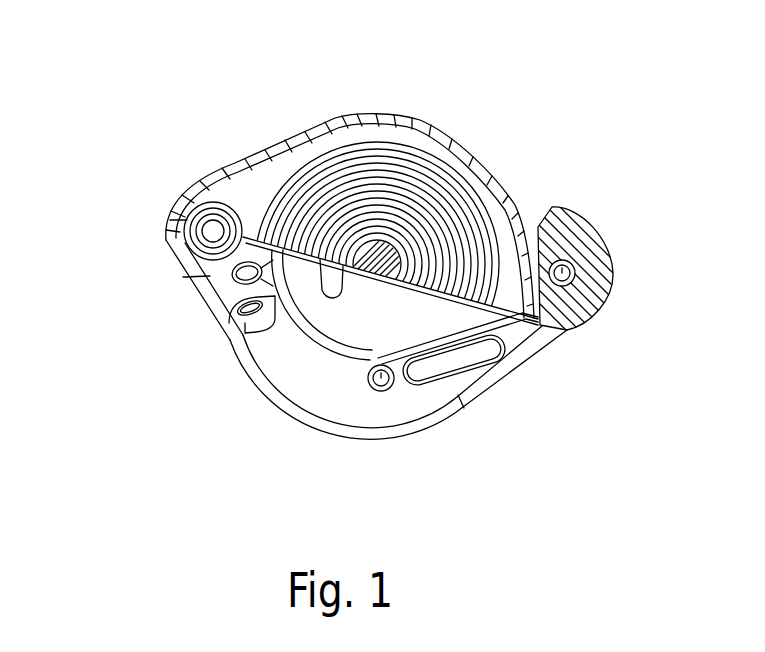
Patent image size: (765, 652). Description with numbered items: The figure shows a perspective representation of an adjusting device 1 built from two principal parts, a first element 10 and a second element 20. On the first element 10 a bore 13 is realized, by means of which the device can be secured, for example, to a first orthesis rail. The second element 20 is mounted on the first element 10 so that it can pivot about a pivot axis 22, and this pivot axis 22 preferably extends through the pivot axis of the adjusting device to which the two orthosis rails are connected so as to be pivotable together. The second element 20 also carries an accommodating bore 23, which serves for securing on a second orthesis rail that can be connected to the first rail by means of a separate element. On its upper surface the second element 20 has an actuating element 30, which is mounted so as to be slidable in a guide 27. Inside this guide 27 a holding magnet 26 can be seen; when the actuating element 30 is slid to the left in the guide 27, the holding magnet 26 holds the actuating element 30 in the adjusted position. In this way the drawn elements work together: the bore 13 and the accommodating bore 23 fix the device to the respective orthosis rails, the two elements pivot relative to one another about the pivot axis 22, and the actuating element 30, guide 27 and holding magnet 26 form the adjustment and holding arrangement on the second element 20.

The adjusting device 1 is at (331, 93).
The first element 10 is at (207, 275).
The bore 13 is at (216, 228).
The second element 20 is at (277, 367).
The pivot axis 22 is at (375, 250).
The accommodating bore 23 is at (577, 250).
The holding magnet 26 is at (375, 390).
The guide 27 is at (400, 385).
The actuating element 30 is at (470, 360).